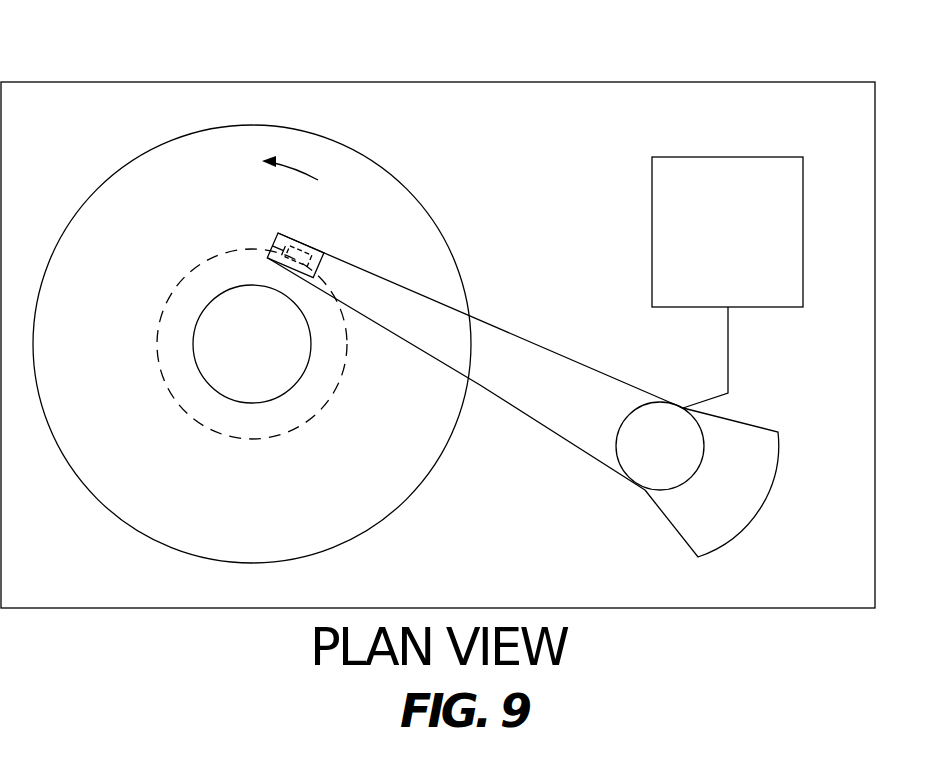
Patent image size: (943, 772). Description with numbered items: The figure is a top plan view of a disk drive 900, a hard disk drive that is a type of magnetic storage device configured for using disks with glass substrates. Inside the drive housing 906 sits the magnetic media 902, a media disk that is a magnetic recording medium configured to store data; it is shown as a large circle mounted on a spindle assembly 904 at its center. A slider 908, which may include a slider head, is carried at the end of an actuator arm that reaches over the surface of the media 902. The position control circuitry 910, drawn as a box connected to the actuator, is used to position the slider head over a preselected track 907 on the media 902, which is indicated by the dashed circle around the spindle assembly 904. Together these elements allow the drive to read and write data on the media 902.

The disk drive 900 is at (205, 72).
The magnetic media 902 is at (385, 170).
The spindle assembly 904 is at (273, 346).
The drive housing 906 is at (583, 82).
The track 907 is at (228, 252).
The slider 908 is at (325, 249).
The position control circuitry 910 is at (742, 246).